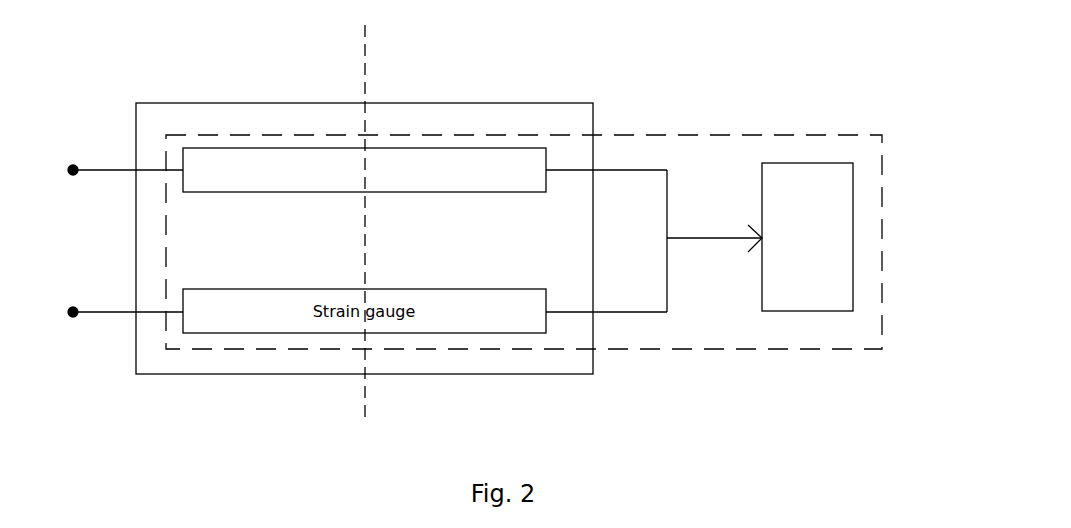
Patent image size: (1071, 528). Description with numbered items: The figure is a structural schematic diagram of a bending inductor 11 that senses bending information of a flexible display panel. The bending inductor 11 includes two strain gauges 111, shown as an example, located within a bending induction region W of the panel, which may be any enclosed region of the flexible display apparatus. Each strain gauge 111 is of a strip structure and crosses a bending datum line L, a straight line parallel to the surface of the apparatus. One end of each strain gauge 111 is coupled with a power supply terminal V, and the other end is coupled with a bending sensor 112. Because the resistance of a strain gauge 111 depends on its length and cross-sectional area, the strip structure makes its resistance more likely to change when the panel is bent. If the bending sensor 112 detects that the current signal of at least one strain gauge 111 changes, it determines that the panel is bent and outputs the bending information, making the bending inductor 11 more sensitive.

The bending inductor 11 is at (882, 328).
The strain gauge 111 is at (512, 147).
The bending sensor 112 is at (853, 190).
The bending induction region W is at (243, 123).
The bending datum line L is at (365, 59).
The power supply terminal V is at (113, 241).